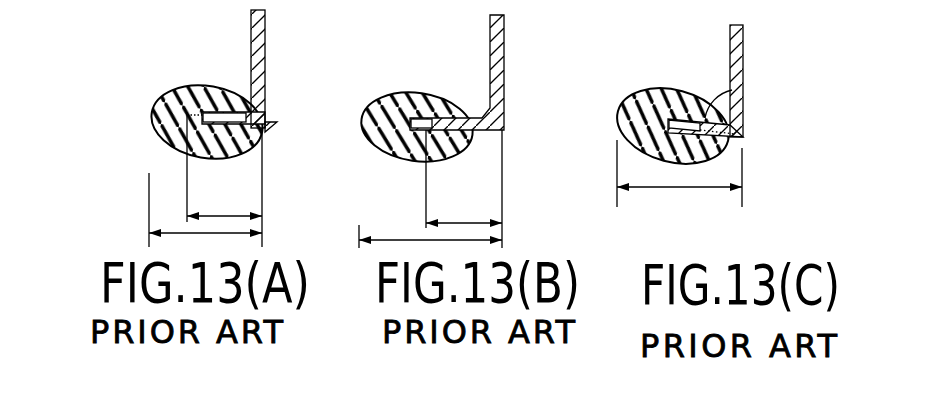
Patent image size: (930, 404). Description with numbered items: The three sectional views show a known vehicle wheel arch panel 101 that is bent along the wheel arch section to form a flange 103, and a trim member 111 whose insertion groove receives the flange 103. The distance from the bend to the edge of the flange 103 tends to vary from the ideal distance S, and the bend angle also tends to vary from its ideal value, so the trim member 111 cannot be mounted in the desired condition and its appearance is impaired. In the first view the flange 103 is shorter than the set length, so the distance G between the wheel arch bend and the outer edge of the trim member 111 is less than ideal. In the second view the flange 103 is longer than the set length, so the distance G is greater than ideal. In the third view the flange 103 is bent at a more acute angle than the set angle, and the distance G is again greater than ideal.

In FIG. 13A, the panel 101 is at (265, 33).
In FIG. 13B, the panel 101 is at (504, 33).
In FIG. 13C, the panel 101 is at (743, 40).
In FIG. 13A, the flange 103 is at (220, 112).
In FIG. 13B, the flange 103 is at (450, 118).
In FIG. 13C, the flange 103 is at (690, 112).
In FIG. 13A, the trim member 111 is at (165, 137).
In FIG. 13B, the trim member 111 is at (377, 140).
In FIG. 13C, the trim member 111 is at (637, 143).
In FIG. 13A, the ideal distance S is at (224, 179).
In FIG. 13B, the ideal distance S is at (464, 189).
In FIG. 13A, the distance between wheel arch bend and outer edge of trim member G is at (178, 237).
In FIG. 13B, the distance between wheel arch bend and outer edge of trim member G is at (397, 240).
In FIG. 13C, the distance between wheel arch bend and outer edge of trim member G is at (677, 190).